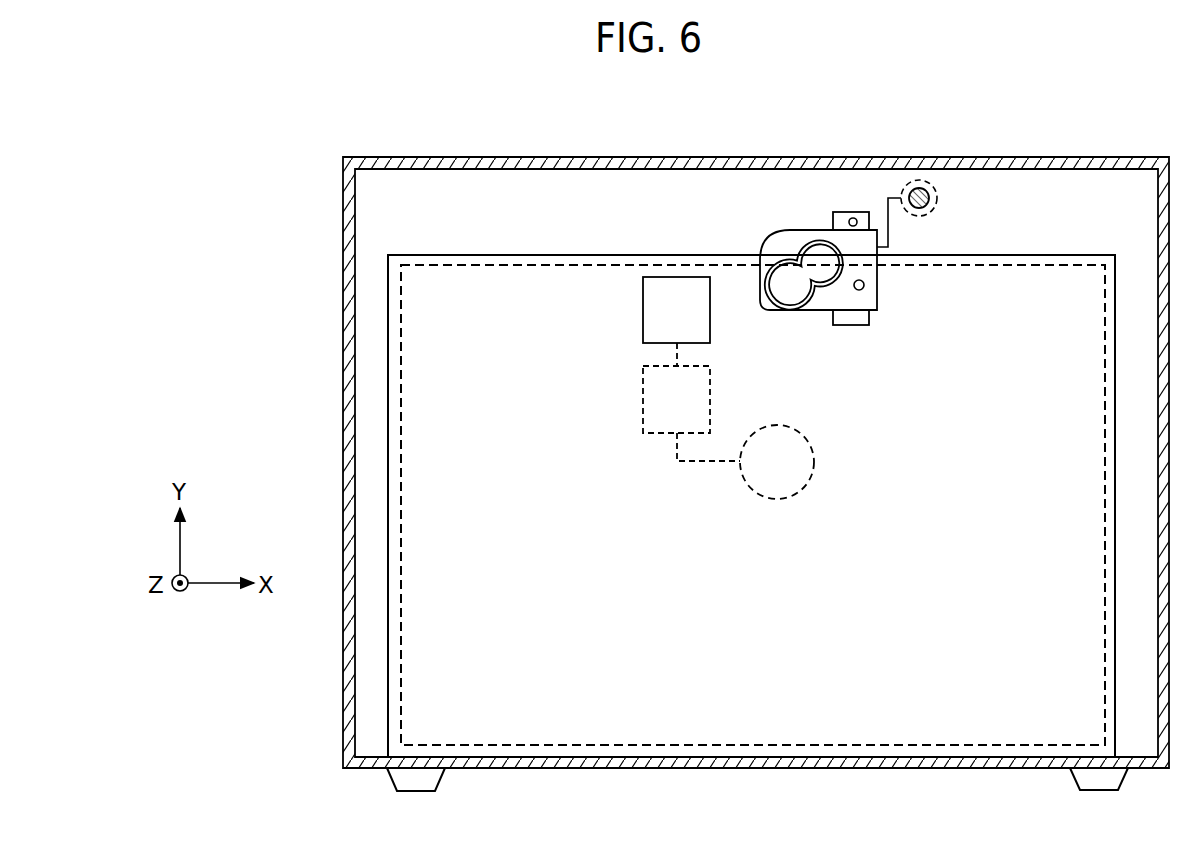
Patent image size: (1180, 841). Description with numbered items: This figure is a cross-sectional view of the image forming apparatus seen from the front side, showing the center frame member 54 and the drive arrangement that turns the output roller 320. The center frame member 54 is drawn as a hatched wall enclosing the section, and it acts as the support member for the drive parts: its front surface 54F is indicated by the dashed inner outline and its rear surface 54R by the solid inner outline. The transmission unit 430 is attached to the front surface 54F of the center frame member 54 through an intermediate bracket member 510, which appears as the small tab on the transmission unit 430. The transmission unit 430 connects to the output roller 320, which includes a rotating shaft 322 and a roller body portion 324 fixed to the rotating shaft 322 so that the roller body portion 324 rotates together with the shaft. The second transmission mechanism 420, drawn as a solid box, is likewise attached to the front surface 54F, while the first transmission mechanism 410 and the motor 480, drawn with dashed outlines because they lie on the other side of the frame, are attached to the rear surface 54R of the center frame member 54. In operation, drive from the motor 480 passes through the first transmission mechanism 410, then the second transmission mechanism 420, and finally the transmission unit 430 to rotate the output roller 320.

The center frame member 54 is at (386, 681).
The rear surface 54R is at (528, 278).
The front surface 54F is at (602, 730).
The output roller 320 is at (943, 197).
The rotating shaft 322 is at (920, 189).
The roller body portion 324 is at (932, 212).
The first transmission mechanism 410 is at (643, 400).
The second transmission mechanism 420 is at (710, 330).
The transmission unit 430 is at (878, 297).
The motor 480 is at (817, 460).
The intermediate bracket member 510 is at (850, 212).